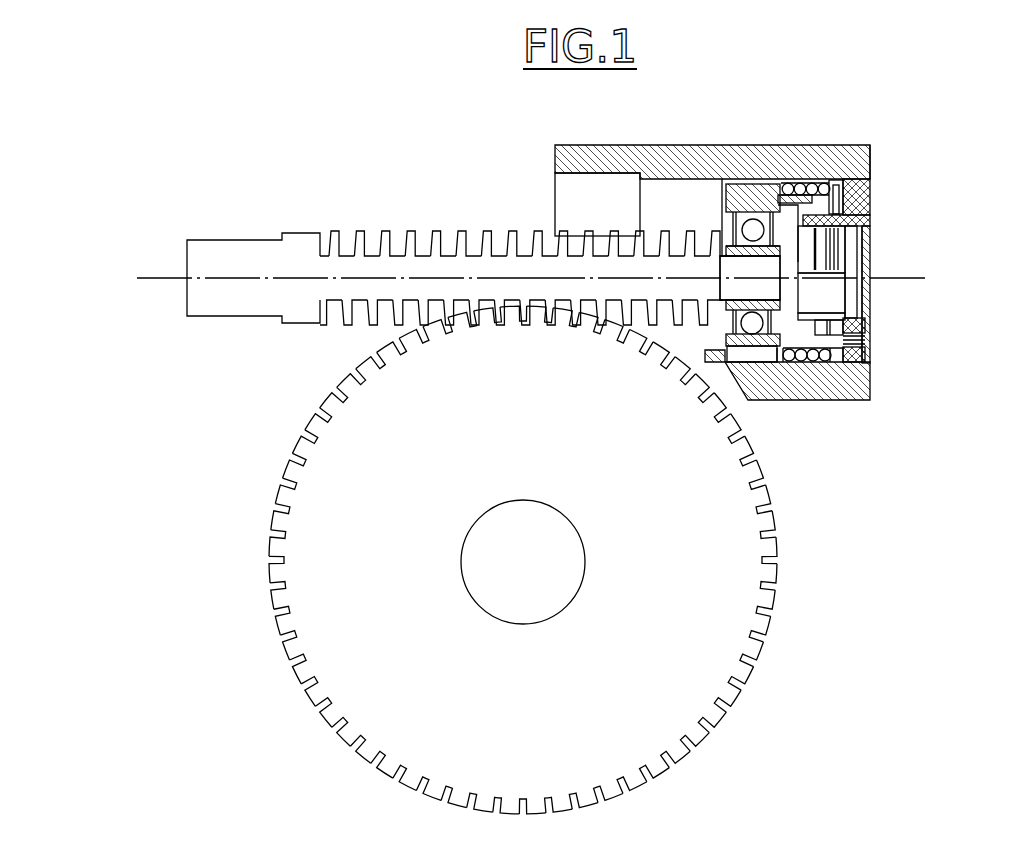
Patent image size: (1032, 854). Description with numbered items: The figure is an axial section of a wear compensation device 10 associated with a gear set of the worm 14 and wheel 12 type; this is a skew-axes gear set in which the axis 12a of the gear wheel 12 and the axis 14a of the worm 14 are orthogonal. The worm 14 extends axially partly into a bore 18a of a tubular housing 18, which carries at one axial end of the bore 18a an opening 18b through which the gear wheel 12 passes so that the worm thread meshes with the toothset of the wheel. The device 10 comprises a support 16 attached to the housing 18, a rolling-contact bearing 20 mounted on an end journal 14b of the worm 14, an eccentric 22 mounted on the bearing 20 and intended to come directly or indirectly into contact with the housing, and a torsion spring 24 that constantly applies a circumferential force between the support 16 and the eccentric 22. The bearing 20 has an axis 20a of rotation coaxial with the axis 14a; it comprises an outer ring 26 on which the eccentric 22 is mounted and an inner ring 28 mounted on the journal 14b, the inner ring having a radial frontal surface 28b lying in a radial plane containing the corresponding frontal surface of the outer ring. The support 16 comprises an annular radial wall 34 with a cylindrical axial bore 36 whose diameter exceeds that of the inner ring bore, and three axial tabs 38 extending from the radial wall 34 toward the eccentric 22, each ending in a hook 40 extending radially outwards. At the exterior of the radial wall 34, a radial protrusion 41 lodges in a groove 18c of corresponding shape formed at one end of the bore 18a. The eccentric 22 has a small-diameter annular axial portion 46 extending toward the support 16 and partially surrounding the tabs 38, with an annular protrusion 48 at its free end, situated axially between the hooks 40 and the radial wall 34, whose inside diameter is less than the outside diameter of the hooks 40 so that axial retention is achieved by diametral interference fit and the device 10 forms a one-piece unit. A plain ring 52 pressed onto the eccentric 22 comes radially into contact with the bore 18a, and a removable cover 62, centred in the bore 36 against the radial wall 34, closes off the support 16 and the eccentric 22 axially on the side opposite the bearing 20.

The wear compensation device 10 is at (924, 264).
The gear wheel 12 is at (778, 571).
The axis of the gear wheel 12a is at (530, 559).
The worm 14 is at (233, 319).
The axis of the worm 14a is at (289, 277).
The end journal of the worm 14b is at (750, 292).
The support 16 is at (871, 186).
The tubular housing 18 is at (700, 160).
The bore of the housing 18a is at (679, 193).
The opening of the housing 18b is at (732, 387).
The groove of the housing 18c is at (870, 152).
The rolling-contact bearing 20 is at (773, 310).
The axis of rotation of the bearing 20a is at (511, 277).
The eccentric 22 is at (764, 209).
The torsion spring 24 is at (808, 183).
The outer ring 26 is at (810, 208).
The inner ring 28 is at (725, 247).
The radial frontal surface of the inner ring 28b is at (825, 347).
The annular radial wall 34 is at (853, 205).
The cylindrical axial bore 36 is at (854, 305).
The axial tabs 38 is at (836, 305).
The hook 40 is at (836, 195).
The radial protrusion 41 is at (858, 183).
The small-diameter annular axial portion 46 is at (800, 350).
The annular protrusion 48 is at (863, 340).
The plain ring 52 is at (758, 187).
The removable cover 62 is at (871, 241).